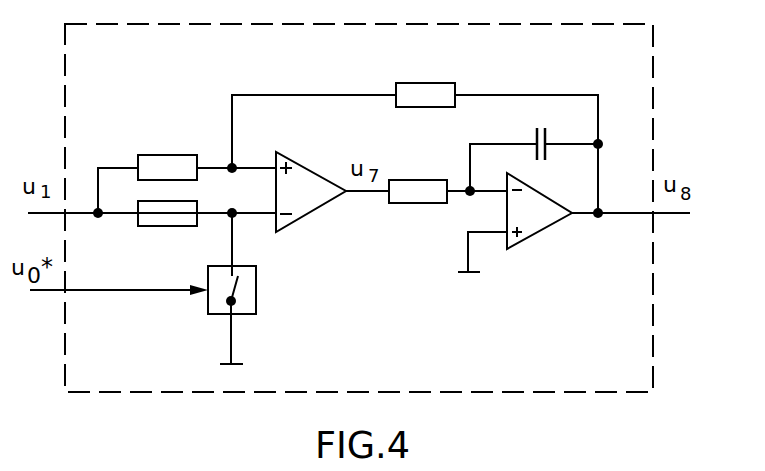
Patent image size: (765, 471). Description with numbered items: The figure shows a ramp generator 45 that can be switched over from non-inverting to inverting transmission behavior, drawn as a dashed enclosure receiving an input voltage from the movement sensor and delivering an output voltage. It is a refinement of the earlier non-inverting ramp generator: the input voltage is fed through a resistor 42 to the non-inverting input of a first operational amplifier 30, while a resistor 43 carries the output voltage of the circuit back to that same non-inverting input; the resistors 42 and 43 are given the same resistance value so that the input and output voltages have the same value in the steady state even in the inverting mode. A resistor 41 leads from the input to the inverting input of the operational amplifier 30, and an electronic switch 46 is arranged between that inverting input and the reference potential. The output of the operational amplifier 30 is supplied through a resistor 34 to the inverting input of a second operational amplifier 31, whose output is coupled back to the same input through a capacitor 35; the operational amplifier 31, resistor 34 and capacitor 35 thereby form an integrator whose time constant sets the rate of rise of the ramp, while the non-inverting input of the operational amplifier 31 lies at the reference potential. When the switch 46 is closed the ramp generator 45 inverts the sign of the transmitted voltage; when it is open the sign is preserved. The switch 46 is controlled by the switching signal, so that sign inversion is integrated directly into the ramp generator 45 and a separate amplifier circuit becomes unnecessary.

The operational amplifier 30 is at (308, 214).
The operational amplifier 31 is at (542, 232).
The resistor 34 is at (413, 206).
The capacitor 35 is at (533, 139).
The resistor 41 is at (158, 228).
The resistor 42 is at (166, 154).
The resistor 43 is at (420, 82).
The ramp generator 45 is at (653, 268).
The electronic switch 46 is at (257, 306).